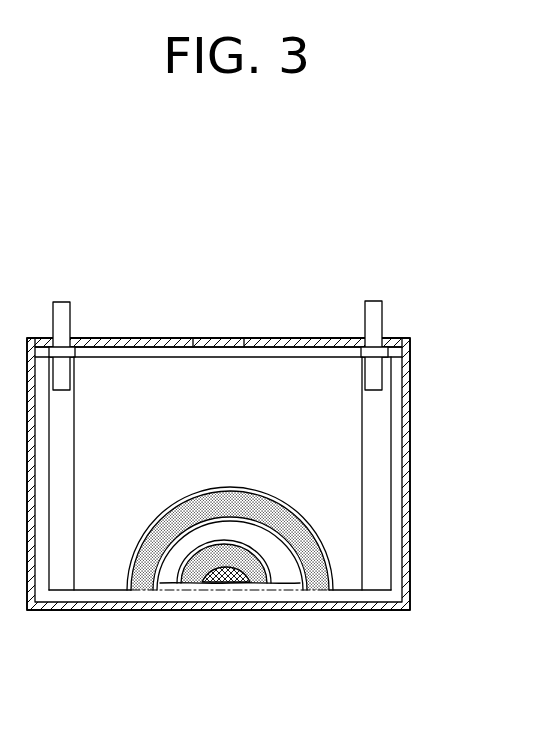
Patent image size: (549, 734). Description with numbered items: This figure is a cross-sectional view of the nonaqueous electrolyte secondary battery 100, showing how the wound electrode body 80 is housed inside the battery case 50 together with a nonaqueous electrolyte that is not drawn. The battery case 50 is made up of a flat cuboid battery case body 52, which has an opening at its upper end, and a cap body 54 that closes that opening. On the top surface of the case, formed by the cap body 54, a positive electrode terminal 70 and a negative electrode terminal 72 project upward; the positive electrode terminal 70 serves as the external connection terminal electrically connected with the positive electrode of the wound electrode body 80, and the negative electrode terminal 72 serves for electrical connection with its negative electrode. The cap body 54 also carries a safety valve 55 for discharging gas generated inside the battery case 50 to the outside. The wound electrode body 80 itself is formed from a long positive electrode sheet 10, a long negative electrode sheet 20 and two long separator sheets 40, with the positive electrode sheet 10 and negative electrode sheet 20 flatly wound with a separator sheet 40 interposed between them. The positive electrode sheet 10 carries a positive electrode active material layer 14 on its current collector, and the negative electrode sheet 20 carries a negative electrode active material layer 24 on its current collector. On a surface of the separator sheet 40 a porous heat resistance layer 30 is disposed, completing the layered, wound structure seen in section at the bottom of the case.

The nonaqueous electrolyte secondary battery 100 is at (458, 211).
The battery case 50 is at (412, 471).
The battery case body 52 is at (406, 572).
The cap body 54 is at (310, 343).
The safety valve 55 is at (213, 343).
The positive electrode terminal 70 is at (62, 307).
The negative electrode terminal 72 is at (374, 313).
The wound electrode body 80 is at (348, 593).
The positive electrode sheet 10 is at (217, 596).
The positive electrode active material layer 14 is at (132, 578).
The negative electrode sheet 20 is at (230, 623).
The negative electrode active material layer 24 is at (193, 575).
The porous heat resistance layer 30 is at (244, 636).
The separator sheet 40 is at (98, 573).